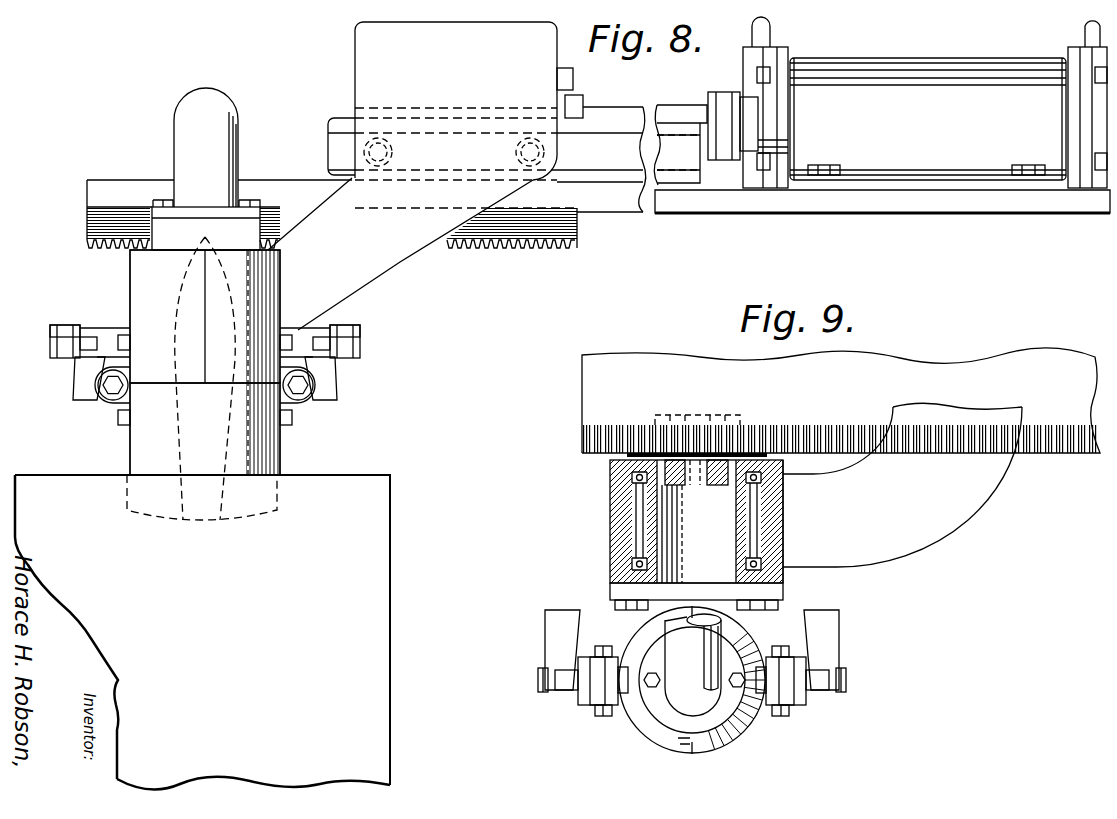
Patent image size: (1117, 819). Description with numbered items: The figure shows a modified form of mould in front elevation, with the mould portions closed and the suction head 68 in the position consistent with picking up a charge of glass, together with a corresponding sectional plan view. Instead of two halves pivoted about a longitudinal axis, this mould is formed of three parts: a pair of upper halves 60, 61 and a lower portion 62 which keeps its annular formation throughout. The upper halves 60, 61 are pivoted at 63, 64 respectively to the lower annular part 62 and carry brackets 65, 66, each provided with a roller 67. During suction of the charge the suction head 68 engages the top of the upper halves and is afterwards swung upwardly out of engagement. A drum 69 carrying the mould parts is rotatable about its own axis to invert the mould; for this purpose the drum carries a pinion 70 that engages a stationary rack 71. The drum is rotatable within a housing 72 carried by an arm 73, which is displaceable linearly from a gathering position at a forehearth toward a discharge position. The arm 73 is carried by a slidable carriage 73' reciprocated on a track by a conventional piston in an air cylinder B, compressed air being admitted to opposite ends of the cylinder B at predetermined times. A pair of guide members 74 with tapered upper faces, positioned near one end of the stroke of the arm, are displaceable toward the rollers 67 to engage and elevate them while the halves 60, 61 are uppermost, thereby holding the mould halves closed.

In FIG. 8, the upper half 60 is at (272, 277).
In FIG. 9, the upper half 60 is at (737, 742).
In FIG. 8, the upper half 61 is at (152, 312).
In FIG. 9, the upper half 61 is at (653, 730).
In FIG. 8, the lower portion 62 is at (267, 453).
In FIG. 8, the pivot 63 is at (295, 387).
In FIG. 9, the pivot 63 is at (793, 713).
In FIG. 8, the pivot 64 is at (108, 392).
In FIG. 9, the pivot 64 is at (595, 710).
In FIG. 8, the bracket 65 is at (310, 350).
In FIG. 9, the bracket 65 is at (793, 680).
In FIG. 8, the bracket 66 is at (103, 355).
In FIG. 9, the bracket 66 is at (595, 673).
In FIG. 8, the roller 67 is at (63, 328).
In FIG. 9, the roller 67 is at (558, 680).
In FIG. 8, the suction head 68 is at (227, 142).
In FIG. 9, the suction head 68 is at (690, 703).
In FIG. 8, the drum 69 is at (128, 293).
In FIG. 9, the drum 69 is at (650, 523).
In FIG. 9, the pinion 70 is at (755, 427).
In FIG. 8, the stationary rack 71 is at (480, 247).
In FIG. 9, the stationary rack 71 is at (603, 442).
In FIG. 9, the housing 72 is at (773, 545).
In FIG. 8, the arm 73 is at (400, 254).
In FIG. 9, the arm 73 is at (902, 485).
In FIG. 8, the slidable carriage 73' is at (445, 101).
In FIG. 8, the guide member 74 is at (72, 362).
In FIG. 9, the guide member 74 is at (560, 630).
In FIG. 8, the air cylinder B is at (933, 75).